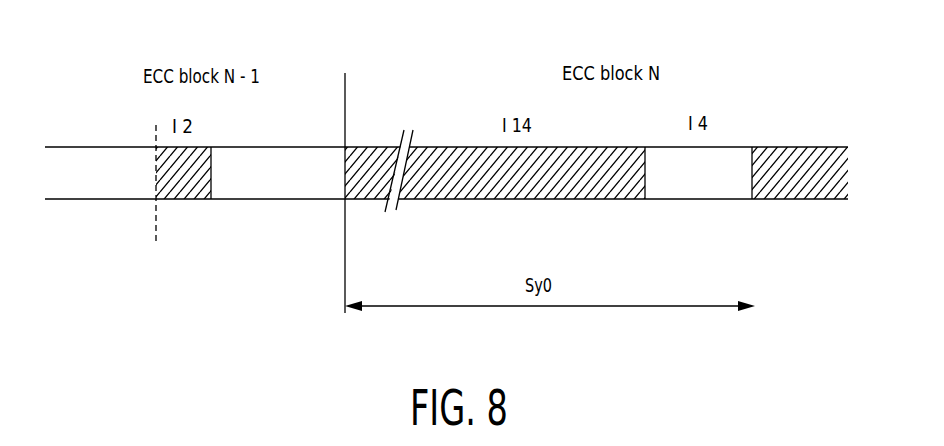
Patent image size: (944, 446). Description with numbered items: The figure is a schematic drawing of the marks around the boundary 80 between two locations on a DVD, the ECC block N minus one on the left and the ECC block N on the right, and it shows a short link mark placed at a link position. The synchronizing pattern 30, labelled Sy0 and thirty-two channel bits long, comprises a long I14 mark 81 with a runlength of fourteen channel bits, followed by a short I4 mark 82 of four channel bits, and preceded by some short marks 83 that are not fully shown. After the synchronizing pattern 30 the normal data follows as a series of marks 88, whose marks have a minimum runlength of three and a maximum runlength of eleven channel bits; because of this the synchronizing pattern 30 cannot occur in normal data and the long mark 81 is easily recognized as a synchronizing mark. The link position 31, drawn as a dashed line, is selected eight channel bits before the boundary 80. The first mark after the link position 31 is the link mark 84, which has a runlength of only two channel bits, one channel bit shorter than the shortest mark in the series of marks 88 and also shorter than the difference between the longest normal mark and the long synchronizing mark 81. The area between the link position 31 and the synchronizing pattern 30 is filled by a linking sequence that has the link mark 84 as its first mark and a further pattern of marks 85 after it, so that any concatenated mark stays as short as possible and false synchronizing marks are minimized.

The synchronizing pattern 30 is at (629, 306).
The link position 31 is at (153, 228).
The boundary 80 is at (345, 89).
The long I14 mark 81 is at (542, 199).
The short I4 mark 82 is at (708, 199).
The short marks 83 is at (369, 199).
The link mark 84 is at (188, 199).
The further pattern of marks 85 is at (272, 199).
The series of marks 88 is at (808, 199).